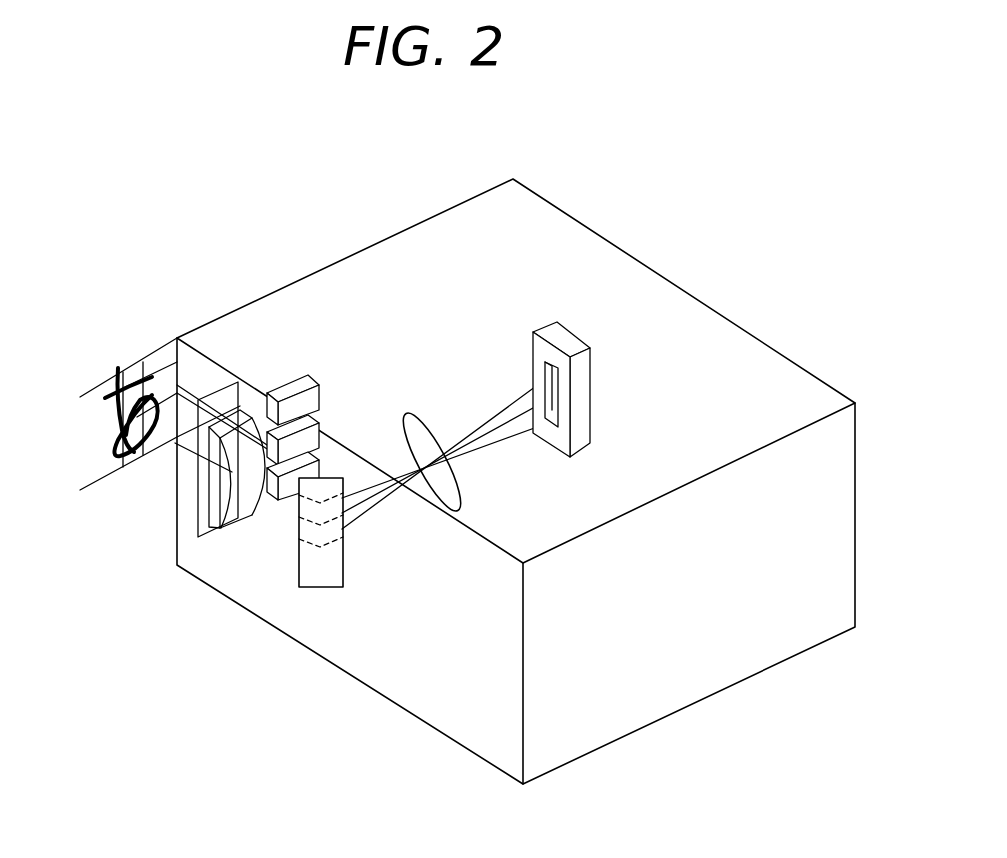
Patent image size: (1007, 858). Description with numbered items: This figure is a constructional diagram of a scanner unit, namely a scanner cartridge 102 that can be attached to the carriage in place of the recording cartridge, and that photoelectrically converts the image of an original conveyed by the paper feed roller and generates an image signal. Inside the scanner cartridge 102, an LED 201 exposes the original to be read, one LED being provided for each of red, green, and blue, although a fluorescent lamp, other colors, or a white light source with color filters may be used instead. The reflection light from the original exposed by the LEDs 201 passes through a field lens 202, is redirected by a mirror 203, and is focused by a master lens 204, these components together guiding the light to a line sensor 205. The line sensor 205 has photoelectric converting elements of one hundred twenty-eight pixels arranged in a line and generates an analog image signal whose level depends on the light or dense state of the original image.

The scanner cartridge 102 is at (673, 282).
The LED 201 is at (316, 378).
The field lens 202 is at (232, 522).
The mirror 203 is at (343, 558).
The master lens 204 is at (427, 420).
The line sensor 205 is at (593, 383).